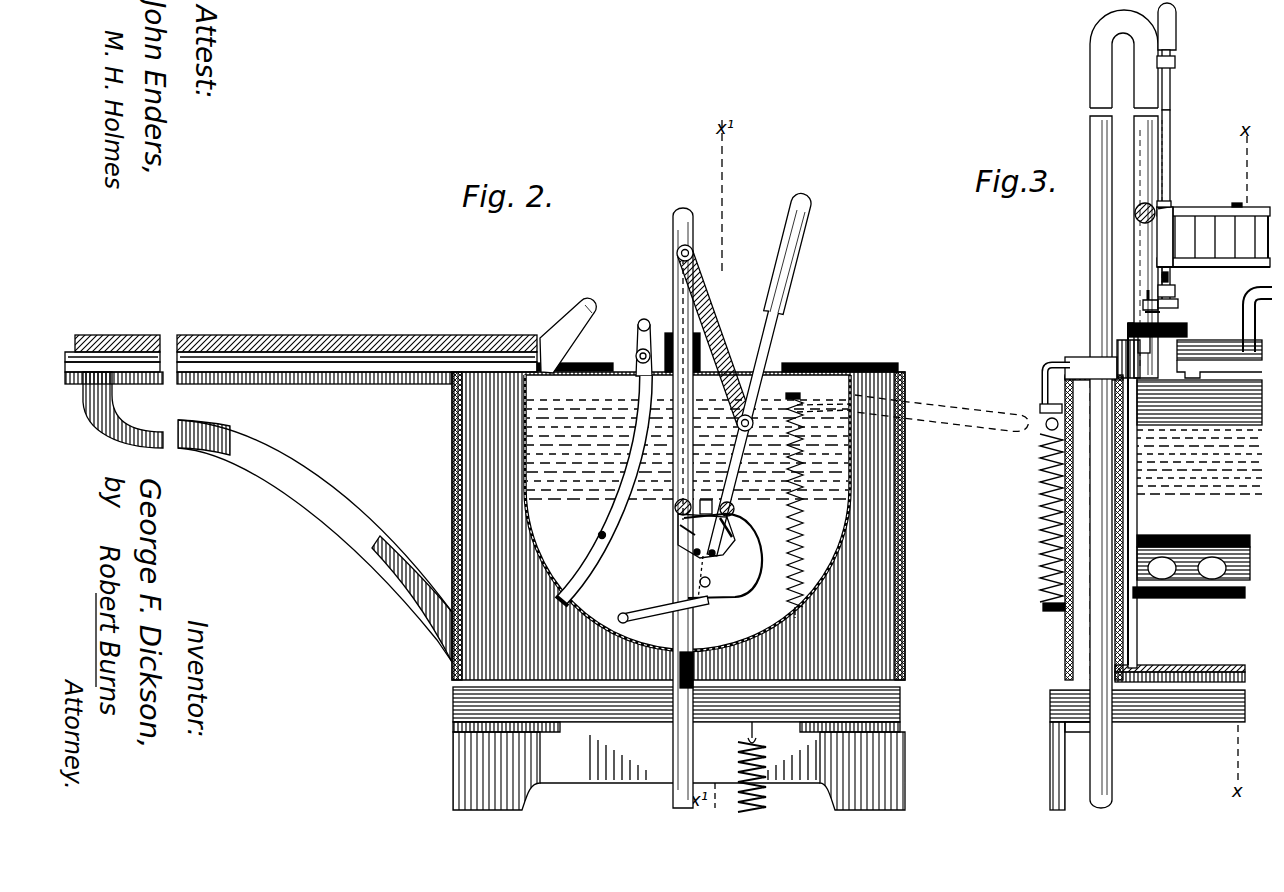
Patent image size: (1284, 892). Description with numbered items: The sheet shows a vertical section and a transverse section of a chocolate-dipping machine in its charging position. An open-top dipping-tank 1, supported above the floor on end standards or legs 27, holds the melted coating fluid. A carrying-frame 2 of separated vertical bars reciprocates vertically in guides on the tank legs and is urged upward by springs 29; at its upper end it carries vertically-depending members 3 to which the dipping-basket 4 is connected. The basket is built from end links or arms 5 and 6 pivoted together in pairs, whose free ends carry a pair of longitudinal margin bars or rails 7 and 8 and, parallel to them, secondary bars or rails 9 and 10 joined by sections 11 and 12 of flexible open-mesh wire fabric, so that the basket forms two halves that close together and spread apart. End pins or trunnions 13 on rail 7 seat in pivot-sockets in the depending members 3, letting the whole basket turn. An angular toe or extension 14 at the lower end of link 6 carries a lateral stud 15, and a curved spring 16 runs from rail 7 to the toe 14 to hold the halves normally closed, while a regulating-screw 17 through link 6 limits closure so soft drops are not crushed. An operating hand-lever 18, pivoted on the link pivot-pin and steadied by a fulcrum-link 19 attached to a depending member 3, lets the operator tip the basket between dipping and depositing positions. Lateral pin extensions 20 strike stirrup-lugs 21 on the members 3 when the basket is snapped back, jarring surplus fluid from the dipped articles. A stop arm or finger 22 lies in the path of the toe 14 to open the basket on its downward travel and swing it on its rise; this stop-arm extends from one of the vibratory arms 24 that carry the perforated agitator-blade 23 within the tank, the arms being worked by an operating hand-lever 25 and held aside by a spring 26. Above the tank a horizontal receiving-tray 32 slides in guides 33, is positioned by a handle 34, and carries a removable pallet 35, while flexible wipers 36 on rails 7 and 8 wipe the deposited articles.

In FIG. 2, the dipping-tank 1 is at (826, 600).
In FIG. 3, the dipping-tank 1 is at (1156, 522).
In FIG. 2, the carrying-frame 2 is at (673, 216).
In FIG. 3, the carrying-frame 2 is at (1090, 265).
In FIG. 2, the vertically-depending members 3 is at (676, 290).
In FIG. 3, the vertically-depending members 3 is at (1134, 240).
In FIG. 2, the dipping-basket 4 is at (716, 512).
In FIG. 3, the dipping-basket 4 is at (1250, 212).
In FIG. 2, the end link or arm 5 is at (677, 526).
In FIG. 3, the end link or arm 5 is at (1170, 205).
In FIG. 2, the end link or arm 6 is at (733, 524).
In FIG. 3, the end link or arm 6 is at (1170, 278).
In FIG. 2, the longitudinal margin bar or rail 7 is at (674, 506).
In FIG. 3, the longitudinal margin bar or rail 7 is at (1188, 207).
In FIG. 2, the longitudinal margin bar or rail 8 is at (734, 506).
In FIG. 2, the secondary bar or rail 9 is at (690, 565).
In FIG. 3, the secondary bar or rail 9 is at (1237, 267).
In FIG. 2, the secondary bar or rail 10 is at (720, 568).
In FIG. 2, the open-mesh flexible wire fabric section 11 is at (676, 531).
In FIG. 3, the open-mesh flexible wire fabric section 11 is at (1268, 236).
In FIG. 2, the open-mesh flexible wire fabric section 12 is at (718, 553).
In FIG. 3, the end pins or trunnions 13 is at (1136, 212).
In FIG. 2, the angular toe or extension 14 is at (636, 613).
In FIG. 3, the angular toe or extension 14 is at (1178, 306).
In FIG. 2, the lateral stud or projection 15 is at (618, 616).
In FIG. 3, the lateral stud or projection 15 is at (1148, 318).
In FIG. 2, the curved spring 16 is at (723, 565).
In FIG. 3, the curved spring 16 is at (1175, 292).
In FIG. 2, the regulating-screw 17 is at (690, 551).
In FIG. 2, the operating hand-lever 18 is at (776, 336).
In FIG. 3, the operating hand-lever 18 is at (1171, 150).
In FIG. 2, the fulcrum-link 19 is at (708, 306).
In FIG. 3, the fulcrum-link 19 is at (1171, 100).
In FIG. 3, the lateral pin extensions 20 is at (1148, 305).
In FIG. 3, the stirrup-lugs 21 is at (1148, 295).
In FIG. 2, the stop arm or finger 22 is at (638, 325).
In FIG. 3, the stop arm or finger 22 is at (1150, 340).
In FIG. 2, the perforated agitator-blade 23 is at (584, 566).
In FIG. 3, the perforated agitator-blade 23 is at (1228, 569).
In FIG. 2, the vibratory arms 24 is at (622, 490).
In FIG. 3, the vibratory arms 24 is at (1133, 496).
In FIG. 2, the operating hand-lever 25 is at (950, 418).
In FIG. 3, the operating hand-lever 25 is at (1045, 380).
In FIG. 2, the spring 26 is at (802, 506).
In FIG. 3, the spring 26 is at (1040, 508).
In FIG. 2, the end standards or legs 27 is at (679, 771).
In FIG. 3, the end standards or legs 27 is at (1050, 772).
In FIG. 2, the springs 29 is at (768, 796).
In FIG. 2, the receiving-tray 32 is at (306, 362).
In FIG. 3, the receiving-tray 32 is at (1222, 350).
In FIG. 2, the guides 33 is at (354, 366).
In FIG. 3, the guides 33 is at (1193, 376).
In FIG. 2, the handle 34 is at (556, 327).
In FIG. 3, the handle 34 is at (1265, 315).
In FIG. 2, the removable pallet 35 is at (375, 337).
In FIG. 3, the flexible wipers 36 is at (1237, 203).